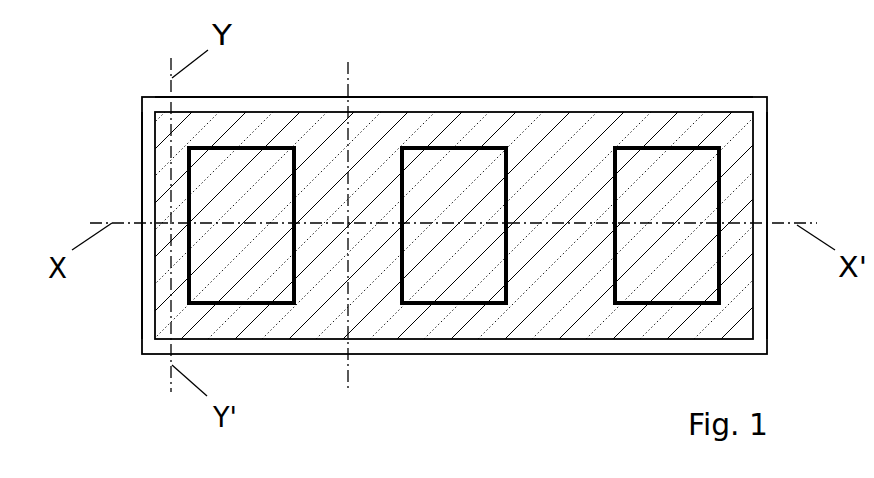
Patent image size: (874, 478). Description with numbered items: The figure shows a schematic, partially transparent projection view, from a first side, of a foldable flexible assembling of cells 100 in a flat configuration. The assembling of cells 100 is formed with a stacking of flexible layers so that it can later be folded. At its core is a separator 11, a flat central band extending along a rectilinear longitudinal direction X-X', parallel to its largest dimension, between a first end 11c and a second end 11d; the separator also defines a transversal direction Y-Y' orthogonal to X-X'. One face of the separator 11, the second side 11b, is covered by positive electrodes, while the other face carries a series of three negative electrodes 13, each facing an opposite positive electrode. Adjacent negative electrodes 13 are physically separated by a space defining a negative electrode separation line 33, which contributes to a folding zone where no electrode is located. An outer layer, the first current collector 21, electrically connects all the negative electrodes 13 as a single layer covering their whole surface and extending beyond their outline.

The foldable flexible assembling of cells 100 is at (108, 60).
The separator 11 is at (519, 101).
The second side of the separator 11b is at (417, 105).
The first end of the separator 11c is at (155, 178).
The second end of the separator 11d is at (760, 175).
The first current collector 21 is at (601, 135).
The negative electrodes 13 is at (672, 148).
The negative electrode separation line 33 is at (348, 78).